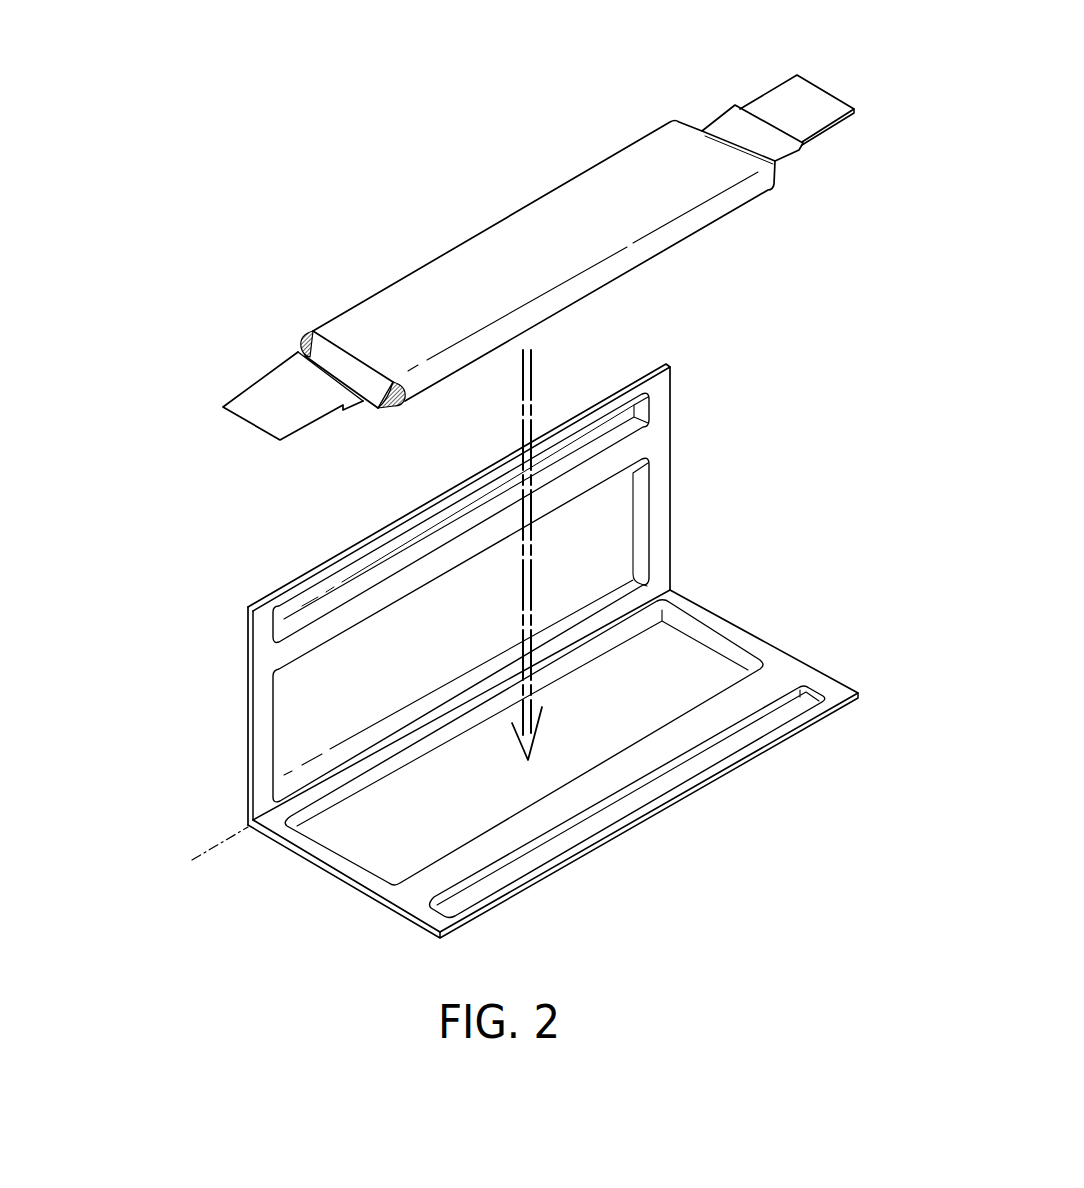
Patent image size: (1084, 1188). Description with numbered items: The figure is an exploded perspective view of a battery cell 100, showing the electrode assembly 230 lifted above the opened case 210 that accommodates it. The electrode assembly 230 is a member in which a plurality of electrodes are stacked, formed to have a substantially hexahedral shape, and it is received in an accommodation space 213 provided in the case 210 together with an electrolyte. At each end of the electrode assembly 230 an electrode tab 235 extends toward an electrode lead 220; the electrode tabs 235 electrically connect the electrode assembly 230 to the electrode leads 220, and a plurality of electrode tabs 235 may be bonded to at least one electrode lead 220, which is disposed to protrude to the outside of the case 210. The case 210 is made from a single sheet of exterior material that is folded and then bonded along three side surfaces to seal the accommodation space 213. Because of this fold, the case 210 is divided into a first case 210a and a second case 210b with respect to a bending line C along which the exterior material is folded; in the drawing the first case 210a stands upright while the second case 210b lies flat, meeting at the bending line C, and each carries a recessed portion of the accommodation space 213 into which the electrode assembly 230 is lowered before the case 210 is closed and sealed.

The battery cell 100 is at (471, 80).
The electrode lead 220 is at (776, 95).
The electrode assembly 230 is at (479, 215).
The electrode tab 235 is at (340, 357).
The case 210 is at (683, 522).
The first case 210a is at (616, 459).
The second case 210b is at (712, 712).
The accommodation space 213 is at (568, 558).
The bending line C is at (192, 860).